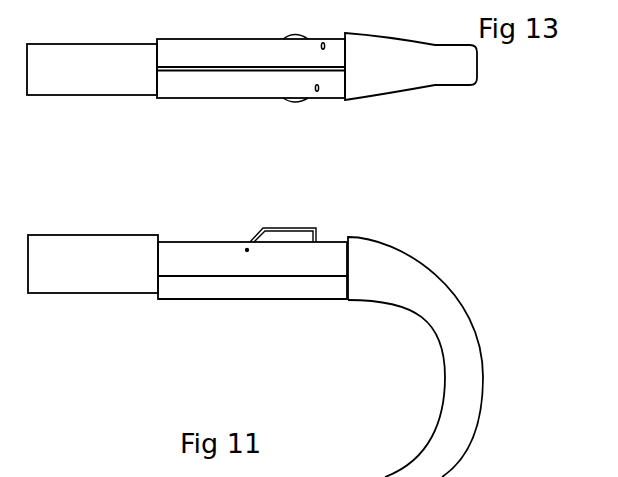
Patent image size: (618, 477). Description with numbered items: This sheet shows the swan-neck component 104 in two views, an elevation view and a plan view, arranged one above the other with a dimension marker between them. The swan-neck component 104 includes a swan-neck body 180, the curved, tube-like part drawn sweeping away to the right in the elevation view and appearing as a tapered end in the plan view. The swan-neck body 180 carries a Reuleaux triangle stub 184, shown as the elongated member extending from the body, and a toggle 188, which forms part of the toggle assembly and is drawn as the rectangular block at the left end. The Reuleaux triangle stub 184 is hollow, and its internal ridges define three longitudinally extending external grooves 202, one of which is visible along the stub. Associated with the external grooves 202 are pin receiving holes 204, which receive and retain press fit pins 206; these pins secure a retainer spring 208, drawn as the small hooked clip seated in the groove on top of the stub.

In FIG. 13, the toggle 188 is at (83, 95).
In FIG. 11, the toggle 188 is at (93, 235).
In FIG. 13, the Reuleaux triangle stub 184 is at (160, 98).
In FIG. 11, the Reuleaux triangle stub 184 is at (188, 243).
In FIG. 13, the pin receiving holes 204 is at (318, 92).
In FIG. 11, the press fit pins 206 is at (319, 245).
In FIG. 11, the retainer spring 208 is at (262, 227).
In FIG. 11, the external grooves 202 is at (250, 276).
In FIG. 13, the swan-neck component 104 is at (388, 110).
In FIG. 13, the swan-neck body 180 is at (476, 85).
In FIG. 11, the swan-neck body 180 is at (528, 243).